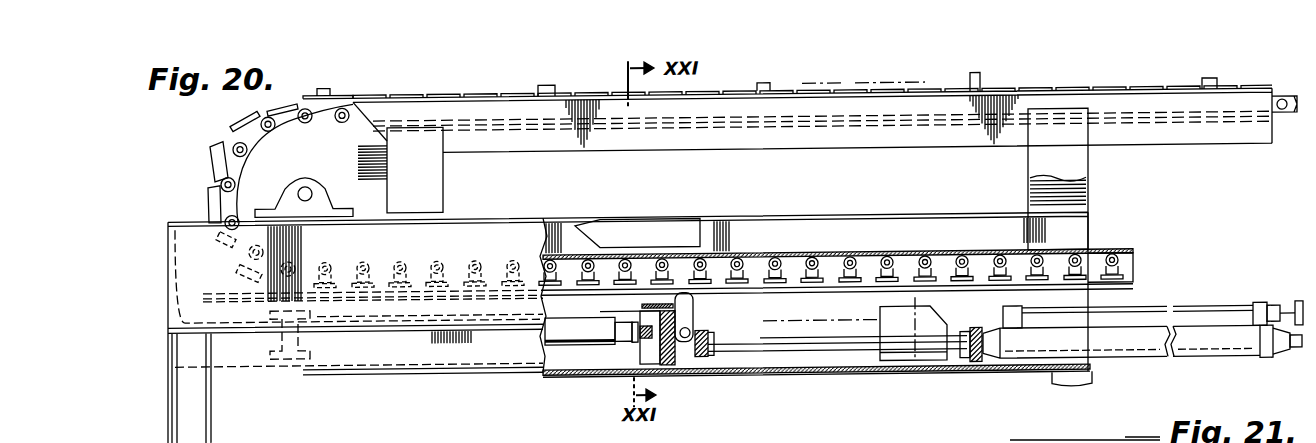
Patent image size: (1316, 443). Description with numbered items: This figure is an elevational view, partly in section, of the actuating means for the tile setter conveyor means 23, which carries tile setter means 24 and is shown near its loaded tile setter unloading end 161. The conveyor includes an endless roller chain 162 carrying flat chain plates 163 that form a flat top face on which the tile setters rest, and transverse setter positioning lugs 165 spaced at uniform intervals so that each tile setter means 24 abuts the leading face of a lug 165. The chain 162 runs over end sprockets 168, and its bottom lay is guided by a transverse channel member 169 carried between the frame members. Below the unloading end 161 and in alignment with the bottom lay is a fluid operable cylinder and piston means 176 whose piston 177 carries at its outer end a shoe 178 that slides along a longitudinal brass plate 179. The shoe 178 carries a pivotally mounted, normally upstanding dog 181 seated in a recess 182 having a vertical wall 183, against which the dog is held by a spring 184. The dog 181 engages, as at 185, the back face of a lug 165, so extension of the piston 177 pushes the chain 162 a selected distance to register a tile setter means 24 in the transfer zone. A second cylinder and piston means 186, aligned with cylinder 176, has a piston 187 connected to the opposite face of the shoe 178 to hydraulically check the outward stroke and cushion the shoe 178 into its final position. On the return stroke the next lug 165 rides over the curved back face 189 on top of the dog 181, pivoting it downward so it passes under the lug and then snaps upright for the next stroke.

In FIG. 20, the tile setter conveyor means 23 is at (727, 98).
In FIG. 20, the tile setter means 24 is at (843, 97).
In FIG. 20, the loaded tile setter unloading end 161 is at (459, 66).
In FIG. 20, the endless roller chain 162 is at (1284, 106).
In FIG. 20, the flat chain plates 163 is at (302, 100).
In FIG. 20, the setter positioning lugs 165 is at (547, 88).
In FIG. 21, the setter positioning lugs 165 is at (1063, 440).
In FIG. 20, the end sprockets 168 is at (388, 195).
In FIG. 20, the transverse channel member 169 is at (1090, 260).
In FIG. 20, the fluid operable cylinder and piston means 176 is at (573, 335).
In FIG. 20, the piston 177 is at (630, 342).
In FIG. 20, the shoe 178 is at (905, 360).
In FIG. 20, the longitudinal brass plate 179 is at (850, 372).
In FIG. 20, the dog 181 is at (706, 308).
In FIG. 20, the recess 182 is at (690, 372).
In FIG. 20, the vertical wall 183 is at (708, 322).
In FIG. 20, the spring 184 is at (650, 305).
In FIG. 20, the engagement point 185 is at (940, 296).
In FIG. 20, the cylinder and piston means 186 is at (1140, 352).
In FIG. 20, the piston 187 is at (780, 360).
In FIG. 20, the curved back face 189 is at (672, 306).